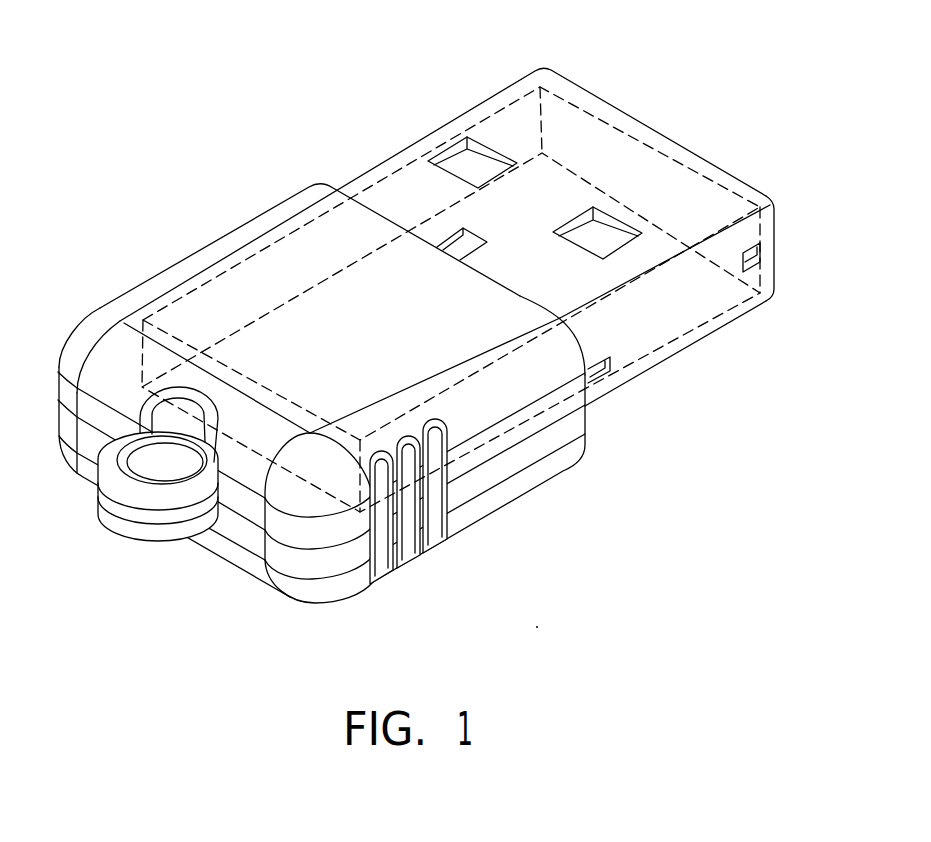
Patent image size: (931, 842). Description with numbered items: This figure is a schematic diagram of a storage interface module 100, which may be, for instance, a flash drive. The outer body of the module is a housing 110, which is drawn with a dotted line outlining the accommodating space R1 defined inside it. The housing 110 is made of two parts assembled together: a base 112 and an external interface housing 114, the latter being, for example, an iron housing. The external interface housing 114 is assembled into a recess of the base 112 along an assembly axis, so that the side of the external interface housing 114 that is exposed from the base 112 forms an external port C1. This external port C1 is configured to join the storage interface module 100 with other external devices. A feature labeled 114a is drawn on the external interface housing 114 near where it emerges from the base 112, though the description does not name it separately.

The storage interface module 100 is at (439, 330).
The housing 110 is at (321, 322).
The base 112 is at (414, 85).
The external interface housing 114 is at (345, 186).
The opening of cover 114a is at (463, 230).
The accommodating space R1 is at (507, 104).
The external port C1 is at (776, 229).